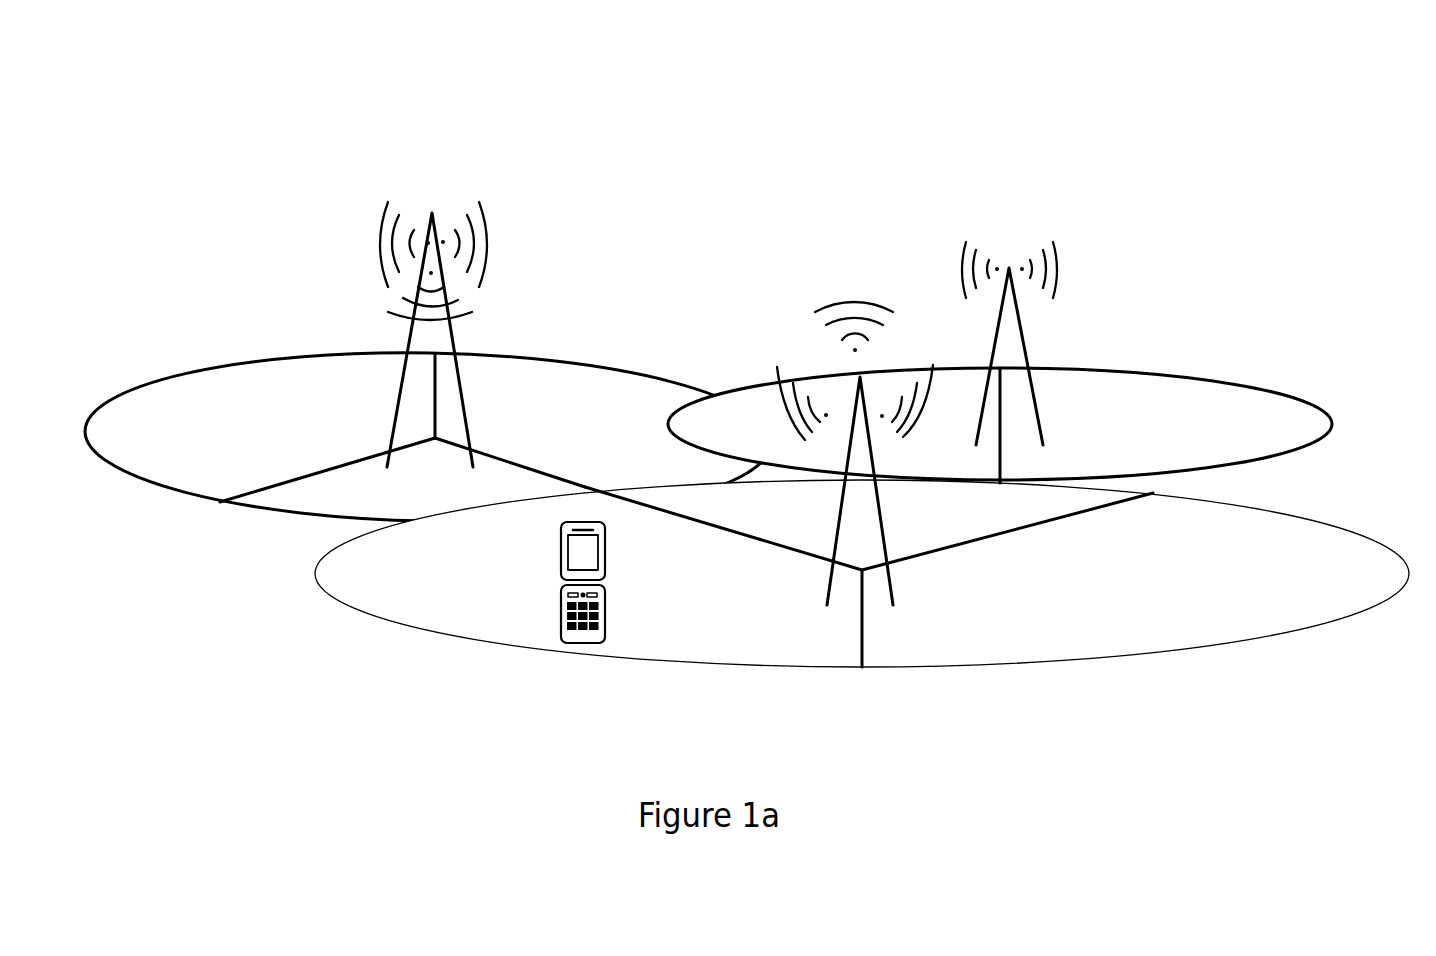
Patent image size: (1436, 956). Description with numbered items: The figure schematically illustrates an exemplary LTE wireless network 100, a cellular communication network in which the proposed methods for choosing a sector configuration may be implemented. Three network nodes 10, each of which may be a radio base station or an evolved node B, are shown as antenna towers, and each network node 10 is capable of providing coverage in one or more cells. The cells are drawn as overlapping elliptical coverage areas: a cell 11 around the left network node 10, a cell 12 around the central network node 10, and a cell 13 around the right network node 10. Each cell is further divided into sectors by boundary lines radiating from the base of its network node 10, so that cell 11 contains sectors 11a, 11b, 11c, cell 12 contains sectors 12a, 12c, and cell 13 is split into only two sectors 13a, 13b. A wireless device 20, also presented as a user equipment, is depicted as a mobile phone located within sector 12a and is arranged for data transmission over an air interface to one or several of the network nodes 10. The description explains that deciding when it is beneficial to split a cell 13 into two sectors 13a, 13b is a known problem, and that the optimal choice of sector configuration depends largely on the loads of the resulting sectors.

The LTE wireless network 100 is at (839, 152).
The network node 10 is at (428, 363).
The cell 11 is at (435, 438).
The sector 11a is at (327, 452).
The sector 11b is at (552, 390).
The sector 11c is at (493, 471).
The cell 12 is at (860, 571).
The sector 12a is at (726, 619).
The sector 12c is at (869, 528).
The cell 13 is at (1002, 420).
The sector 13a is at (936, 460).
The sector 13b is at (1149, 429).
The wireless device 20 is at (560, 588).